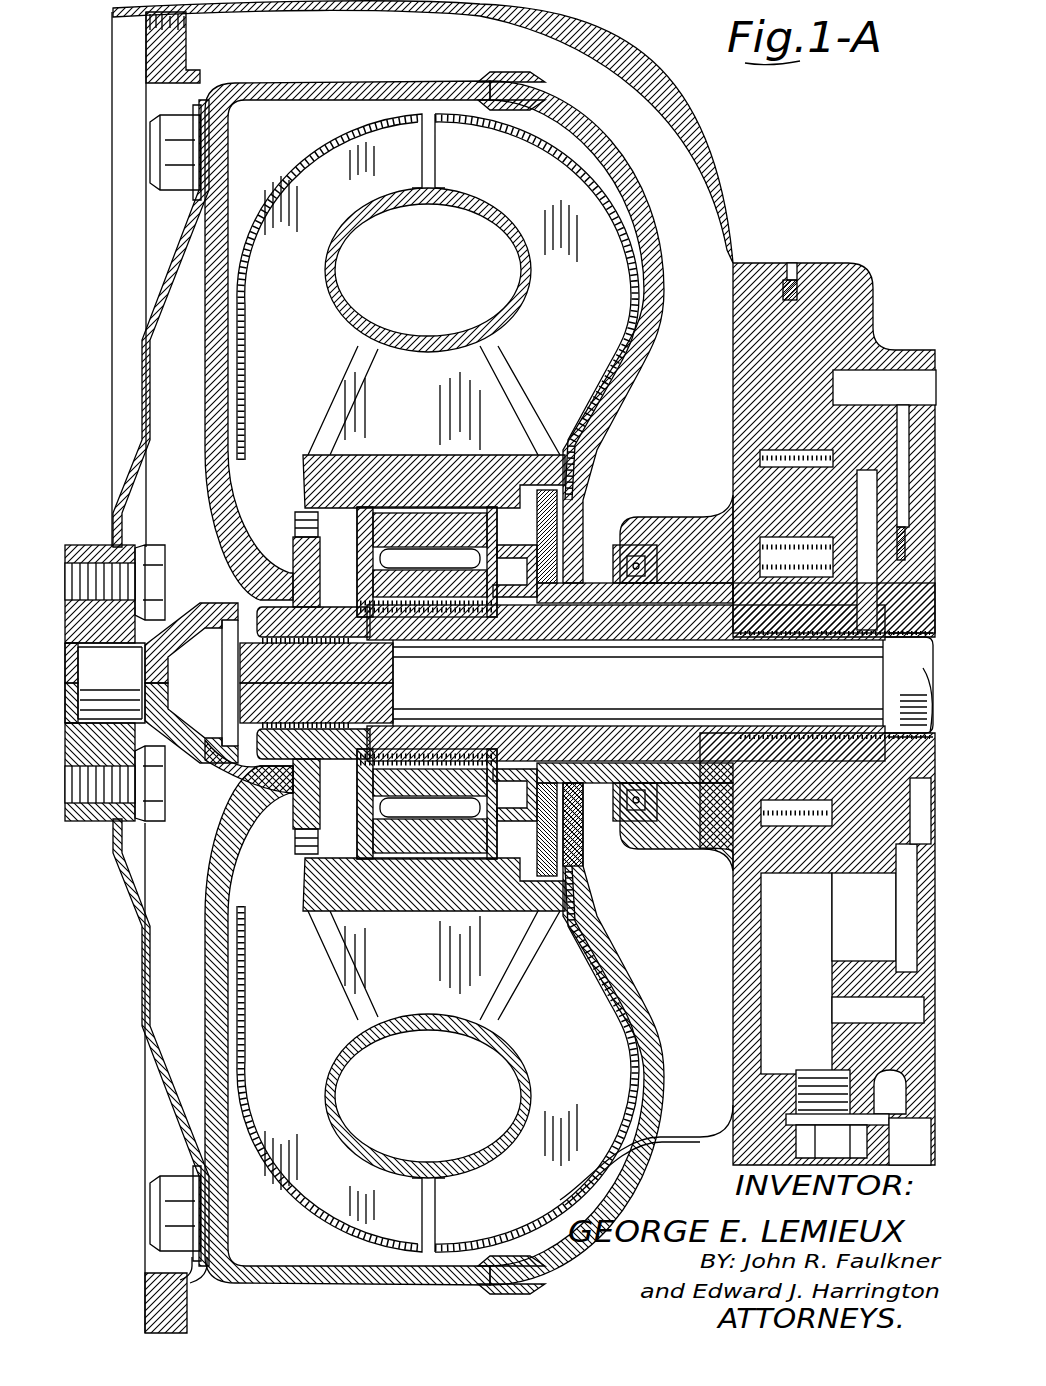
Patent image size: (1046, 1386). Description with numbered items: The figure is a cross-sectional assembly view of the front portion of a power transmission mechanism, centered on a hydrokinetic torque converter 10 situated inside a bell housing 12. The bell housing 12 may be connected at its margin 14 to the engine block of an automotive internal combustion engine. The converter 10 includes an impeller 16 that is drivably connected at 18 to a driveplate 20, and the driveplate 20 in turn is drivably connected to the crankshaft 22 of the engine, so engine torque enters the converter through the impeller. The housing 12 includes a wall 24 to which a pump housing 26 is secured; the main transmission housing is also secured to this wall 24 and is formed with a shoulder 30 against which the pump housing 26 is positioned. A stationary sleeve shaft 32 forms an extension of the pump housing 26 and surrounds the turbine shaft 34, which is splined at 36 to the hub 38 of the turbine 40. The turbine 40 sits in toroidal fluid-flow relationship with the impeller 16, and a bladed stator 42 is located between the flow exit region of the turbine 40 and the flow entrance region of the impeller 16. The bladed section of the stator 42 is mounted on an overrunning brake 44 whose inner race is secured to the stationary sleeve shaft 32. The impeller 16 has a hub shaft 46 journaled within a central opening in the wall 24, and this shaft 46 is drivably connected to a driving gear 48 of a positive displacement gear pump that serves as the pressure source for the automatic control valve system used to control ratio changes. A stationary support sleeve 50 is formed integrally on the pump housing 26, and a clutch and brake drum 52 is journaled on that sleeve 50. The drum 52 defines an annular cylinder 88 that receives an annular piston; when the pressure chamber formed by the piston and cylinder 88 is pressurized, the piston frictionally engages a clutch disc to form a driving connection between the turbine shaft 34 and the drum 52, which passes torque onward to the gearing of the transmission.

The hydrokinetic torque converter 10 is at (590, 134).
The bell housing 12 is at (702, 136).
The margin 14 is at (112, 18).
The impeller 16 is at (582, 228).
The drivable connection 18 is at (165, 128).
The driveplate 20 is at (185, 235).
The crankshaft 22 is at (80, 540).
The wall 24 is at (737, 374).
The pump housing 26 is at (797, 320).
The shoulder 30 is at (865, 290).
The stationary sleeve shaft 32 is at (590, 618).
The turbine shaft 34 is at (588, 765).
The spline 36 is at (262, 758).
The hub 38 is at (305, 560).
The turbine 40 is at (258, 277).
The bladed stator 42 is at (393, 370).
The overrunning brake 44 is at (462, 618).
The hub shaft 46 is at (665, 630).
The driving gear 48 is at (805, 632).
The stationary support sleeve 50 is at (918, 633).
The clutch and brake drum 52 is at (915, 950).
The annular cylinder 88 is at (935, 892).